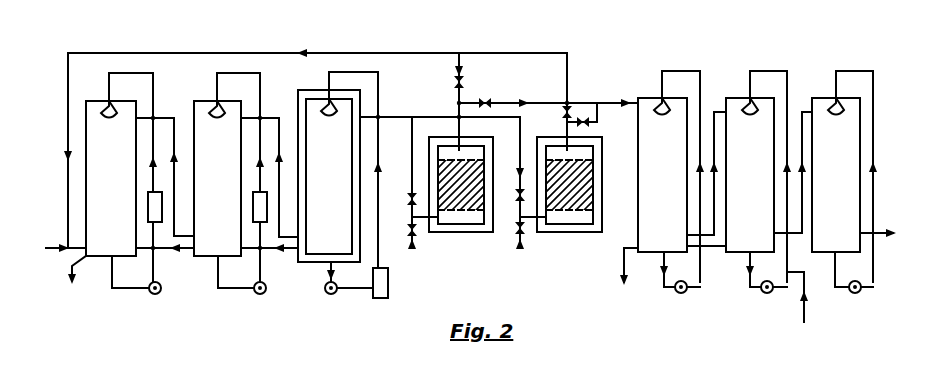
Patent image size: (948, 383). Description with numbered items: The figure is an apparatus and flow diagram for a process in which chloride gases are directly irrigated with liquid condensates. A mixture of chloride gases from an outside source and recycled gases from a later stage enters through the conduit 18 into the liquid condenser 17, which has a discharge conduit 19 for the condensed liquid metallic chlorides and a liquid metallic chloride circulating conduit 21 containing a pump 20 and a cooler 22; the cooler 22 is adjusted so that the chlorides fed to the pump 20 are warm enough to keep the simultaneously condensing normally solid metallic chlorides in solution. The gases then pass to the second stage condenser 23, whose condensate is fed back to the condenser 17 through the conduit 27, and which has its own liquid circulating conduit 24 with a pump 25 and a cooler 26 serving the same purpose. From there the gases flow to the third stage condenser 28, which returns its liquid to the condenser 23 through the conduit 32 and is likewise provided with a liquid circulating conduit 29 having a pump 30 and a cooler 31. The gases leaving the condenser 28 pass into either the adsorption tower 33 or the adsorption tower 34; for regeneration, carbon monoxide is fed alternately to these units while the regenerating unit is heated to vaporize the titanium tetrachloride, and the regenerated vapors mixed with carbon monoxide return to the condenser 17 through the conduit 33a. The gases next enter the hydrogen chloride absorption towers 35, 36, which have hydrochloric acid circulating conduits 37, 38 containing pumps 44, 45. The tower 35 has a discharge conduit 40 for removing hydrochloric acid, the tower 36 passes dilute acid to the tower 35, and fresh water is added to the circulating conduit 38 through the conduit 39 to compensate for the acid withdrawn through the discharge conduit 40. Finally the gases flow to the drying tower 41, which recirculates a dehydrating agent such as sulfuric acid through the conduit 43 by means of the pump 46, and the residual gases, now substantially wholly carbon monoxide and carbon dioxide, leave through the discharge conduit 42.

The liquid condenser 17 is at (140, 177).
The conduit 18 is at (64, 152).
The discharge conduit 19 is at (82, 276).
The pump 20 is at (167, 289).
The liquid metallic chloride circulating conduit 21 is at (136, 289).
The cooler 22 is at (156, 207).
The second stage condenser 23 is at (246, 177).
The liquid circulating conduit 24 is at (240, 289).
The pump 25 is at (272, 289).
The cooler 26 is at (261, 207).
The conduit 27 is at (165, 257).
The third stage condenser 28 is at (409, 170).
The liquid circulating conduit 29 is at (322, 275).
The pump 30 is at (331, 294).
The cooler 31 is at (373, 283).
The conduit 32 is at (269, 257).
The adsorption tower 33 is at (461, 159).
The conduit 33a is at (415, 53).
The adsorption tower 34 is at (550, 159).
The hydrogen chloride absorption tower 35 is at (682, 170).
The hydrogen chloride absorption tower 36 is at (769, 170).
The hydrochloric acid circulating conduit 37 is at (665, 285).
The hydrochloric acid circulating conduit 38 is at (752, 285).
The conduit 39 is at (805, 269).
The discharge conduit 40 is at (610, 264).
The drying tower 41 is at (844, 170).
The discharge conduit 42 is at (883, 232).
The conduit 43 is at (837, 285).
The pump 44 is at (690, 294).
The pump 45 is at (774, 295).
The pump 46 is at (863, 294).